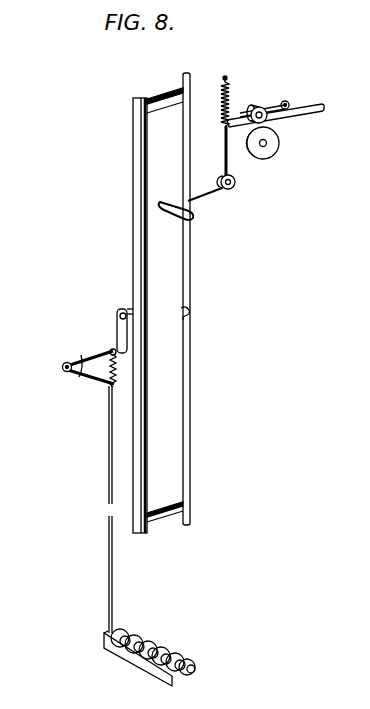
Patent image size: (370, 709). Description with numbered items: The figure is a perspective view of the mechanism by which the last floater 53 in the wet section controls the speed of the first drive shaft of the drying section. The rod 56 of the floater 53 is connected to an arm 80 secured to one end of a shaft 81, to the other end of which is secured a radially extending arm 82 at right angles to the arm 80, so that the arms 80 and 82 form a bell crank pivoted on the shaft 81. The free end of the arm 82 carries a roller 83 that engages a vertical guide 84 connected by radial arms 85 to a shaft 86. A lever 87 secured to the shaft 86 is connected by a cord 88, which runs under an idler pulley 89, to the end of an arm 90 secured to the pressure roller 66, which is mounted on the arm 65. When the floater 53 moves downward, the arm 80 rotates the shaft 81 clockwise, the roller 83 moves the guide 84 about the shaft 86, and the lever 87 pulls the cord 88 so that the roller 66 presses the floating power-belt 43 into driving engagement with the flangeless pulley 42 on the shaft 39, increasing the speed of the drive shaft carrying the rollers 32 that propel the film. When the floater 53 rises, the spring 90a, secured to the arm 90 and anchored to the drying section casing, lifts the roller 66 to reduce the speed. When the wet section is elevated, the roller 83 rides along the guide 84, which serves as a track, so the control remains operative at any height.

The rollers 32 is at (151, 640).
The shaft 39 is at (263, 147).
The flangeless pulley 42 is at (269, 147).
The floating power-belt 43 is at (306, 108).
The floater 53 is at (104, 650).
The rod 56 is at (108, 585).
The arm 65 is at (284, 100).
The pressure roller 66 is at (258, 106).
The arm 80 is at (100, 380).
The shaft 81 is at (62, 366).
The arm 82 is at (117, 328).
The roller 83 is at (125, 309).
The vertical guide 84 is at (133, 223).
The radial arms 85 is at (157, 99).
The shaft 86 is at (190, 360).
The lever 87 is at (163, 209).
The cord 88 is at (207, 193).
The idler pulley 89 is at (234, 186).
The arm 90 is at (225, 130).
The spring 90a is at (222, 79).